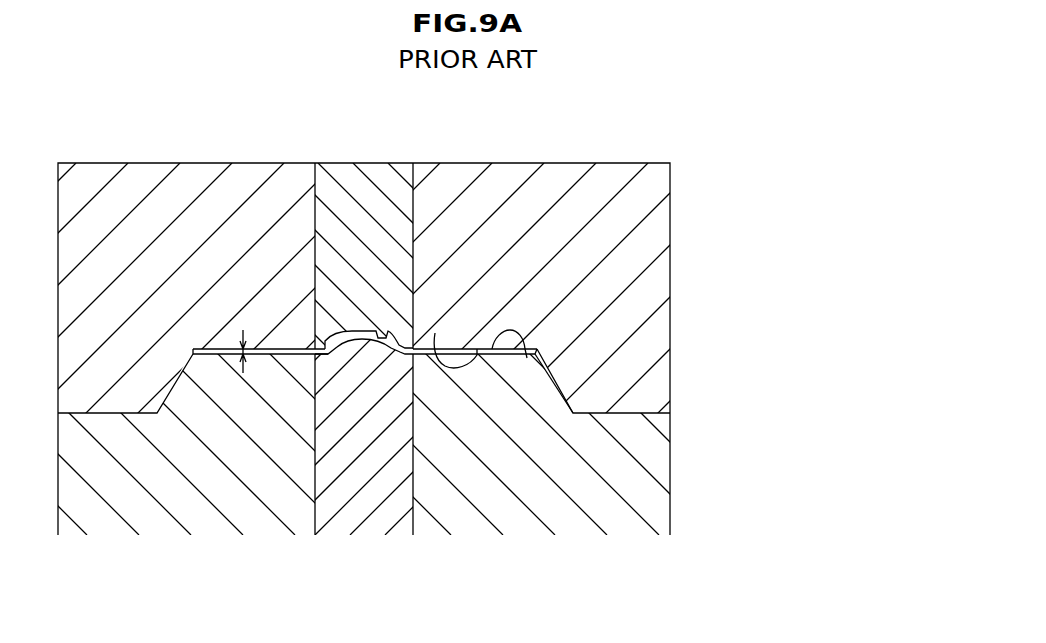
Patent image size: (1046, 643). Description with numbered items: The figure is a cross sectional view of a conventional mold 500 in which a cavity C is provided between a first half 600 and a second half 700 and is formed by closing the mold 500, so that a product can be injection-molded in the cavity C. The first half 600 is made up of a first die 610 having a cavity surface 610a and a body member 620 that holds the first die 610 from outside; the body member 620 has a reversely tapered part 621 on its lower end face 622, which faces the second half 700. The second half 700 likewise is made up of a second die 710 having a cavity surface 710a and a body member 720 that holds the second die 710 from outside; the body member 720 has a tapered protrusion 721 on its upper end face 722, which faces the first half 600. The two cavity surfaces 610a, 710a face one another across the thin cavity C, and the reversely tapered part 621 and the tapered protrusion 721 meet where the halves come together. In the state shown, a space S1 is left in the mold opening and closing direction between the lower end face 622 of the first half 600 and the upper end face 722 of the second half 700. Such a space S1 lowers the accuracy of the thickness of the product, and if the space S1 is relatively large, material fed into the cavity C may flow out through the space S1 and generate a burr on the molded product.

The mold 500 is at (454, 360).
The first half 600 is at (454, 314).
The first die 610 is at (348, 183).
The cavity surface 610a is at (388, 340).
The body member 620 is at (148, 222).
The reversely tapered part 621 is at (548, 387).
The lower end face 622 is at (435, 333).
The second half 700 is at (431, 392).
The second die 710 is at (388, 508).
The cavity surface 710a is at (343, 352).
The body member 720 is at (150, 455).
The tapered protrusion 721 is at (548, 387).
The upper end face 722 is at (527, 358).
The cavity C is at (348, 354).
The space S1 is at (252, 340).